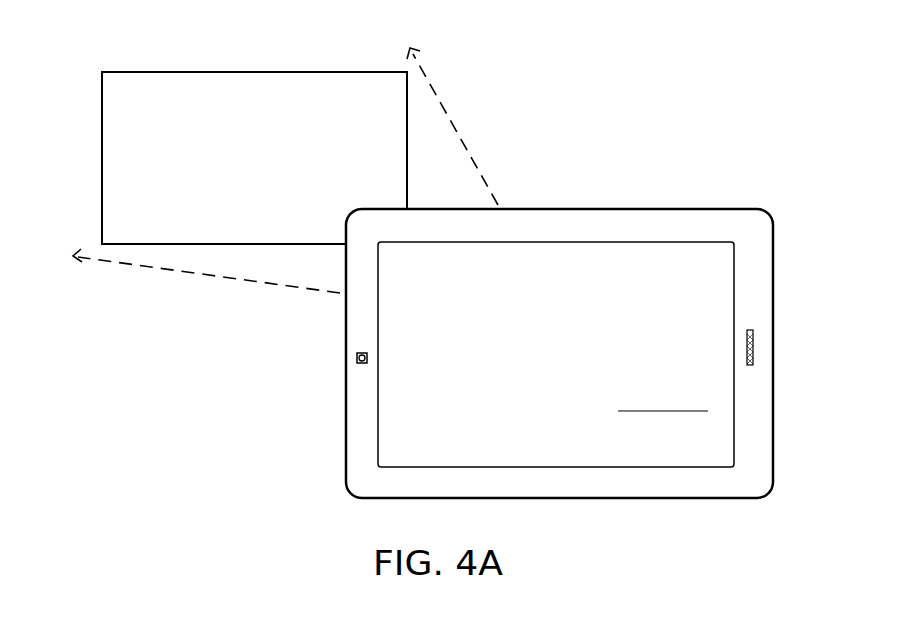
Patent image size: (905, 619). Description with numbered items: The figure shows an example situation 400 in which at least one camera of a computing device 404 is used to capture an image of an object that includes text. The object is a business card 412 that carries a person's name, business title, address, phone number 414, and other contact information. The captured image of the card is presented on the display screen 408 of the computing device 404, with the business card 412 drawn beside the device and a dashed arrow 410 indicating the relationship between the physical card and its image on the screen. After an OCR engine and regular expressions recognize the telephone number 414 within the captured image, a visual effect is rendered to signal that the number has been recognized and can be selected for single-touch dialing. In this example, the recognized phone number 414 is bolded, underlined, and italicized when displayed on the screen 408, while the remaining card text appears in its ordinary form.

The example situation 400 is at (783, 93).
The computing device 404 is at (638, 209).
The display screen 408 is at (677, 462).
The dashed arrow indicating capture direction 410 is at (132, 262).
The business card 412 is at (74, 128).
The telephone number 414 is at (385, 193).